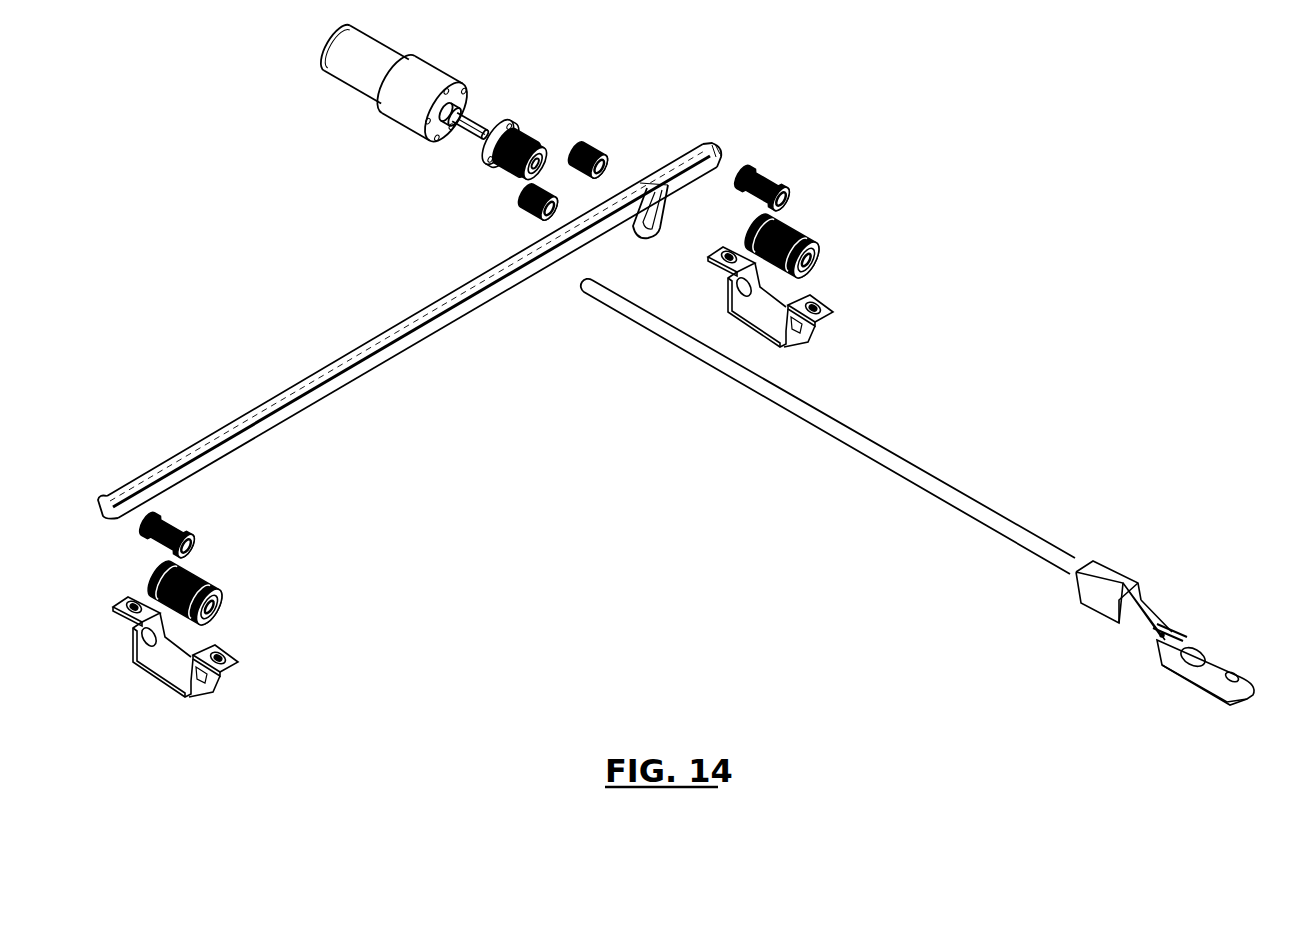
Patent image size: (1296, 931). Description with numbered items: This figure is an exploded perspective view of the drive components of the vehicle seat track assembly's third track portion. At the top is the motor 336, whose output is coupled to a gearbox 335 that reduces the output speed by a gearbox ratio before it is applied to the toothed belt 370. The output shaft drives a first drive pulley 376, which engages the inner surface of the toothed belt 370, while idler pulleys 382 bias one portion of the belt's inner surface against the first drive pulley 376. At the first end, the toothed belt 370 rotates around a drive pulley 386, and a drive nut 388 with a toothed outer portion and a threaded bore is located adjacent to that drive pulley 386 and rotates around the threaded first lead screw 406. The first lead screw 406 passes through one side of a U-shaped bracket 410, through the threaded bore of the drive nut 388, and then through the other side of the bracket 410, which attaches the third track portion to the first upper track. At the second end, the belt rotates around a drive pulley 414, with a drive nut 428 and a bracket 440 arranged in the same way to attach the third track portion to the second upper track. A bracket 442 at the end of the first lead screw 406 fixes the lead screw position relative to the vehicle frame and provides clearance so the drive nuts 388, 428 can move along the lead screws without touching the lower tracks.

The motor 336 is at (376, 75).
The gearbox 335 is at (426, 101).
The first drive pulley 376 is at (533, 135).
The second idler pulley 382 is at (598, 148).
The toothed belt 370 is at (500, 275).
The drive pulley 386 is at (790, 185).
The drive nut 388 is at (813, 230).
The bracket 410 is at (835, 316).
The first lead screw 406 is at (648, 328).
The drive pulley 414 is at (186, 517).
The drive nut 428 is at (205, 576).
The bracket 440 is at (237, 645).
The bracket 442 is at (1208, 645).